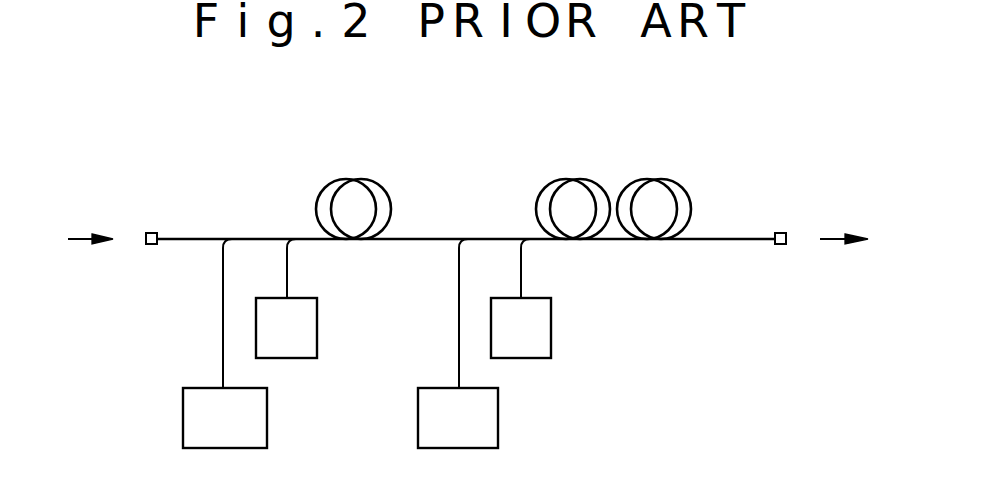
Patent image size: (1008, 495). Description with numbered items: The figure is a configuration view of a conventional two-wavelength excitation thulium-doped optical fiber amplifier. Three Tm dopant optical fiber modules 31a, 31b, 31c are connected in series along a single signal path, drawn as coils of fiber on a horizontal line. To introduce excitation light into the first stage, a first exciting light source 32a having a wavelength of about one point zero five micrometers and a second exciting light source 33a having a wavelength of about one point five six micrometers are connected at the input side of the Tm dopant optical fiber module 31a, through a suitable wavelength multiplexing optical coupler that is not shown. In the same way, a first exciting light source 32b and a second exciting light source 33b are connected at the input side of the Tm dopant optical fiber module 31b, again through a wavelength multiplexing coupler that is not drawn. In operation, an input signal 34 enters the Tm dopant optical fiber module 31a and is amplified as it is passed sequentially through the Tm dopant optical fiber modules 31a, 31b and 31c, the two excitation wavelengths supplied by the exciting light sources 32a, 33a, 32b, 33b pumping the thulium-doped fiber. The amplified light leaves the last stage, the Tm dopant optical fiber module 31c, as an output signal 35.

The Tm dopant optical fiber module 31a is at (331, 183).
The Tm dopant optical fiber module 31b is at (551, 183).
The Tm dopant optical fiber module 31c is at (677, 183).
The first exciting light source 32a is at (317, 330).
The first exciting light source 32b is at (551, 330).
The second exciting light source 33a is at (267, 420).
The second exciting light source 33b is at (498, 420).
The input signal 34 is at (76, 238).
The output signal 35 is at (832, 238).